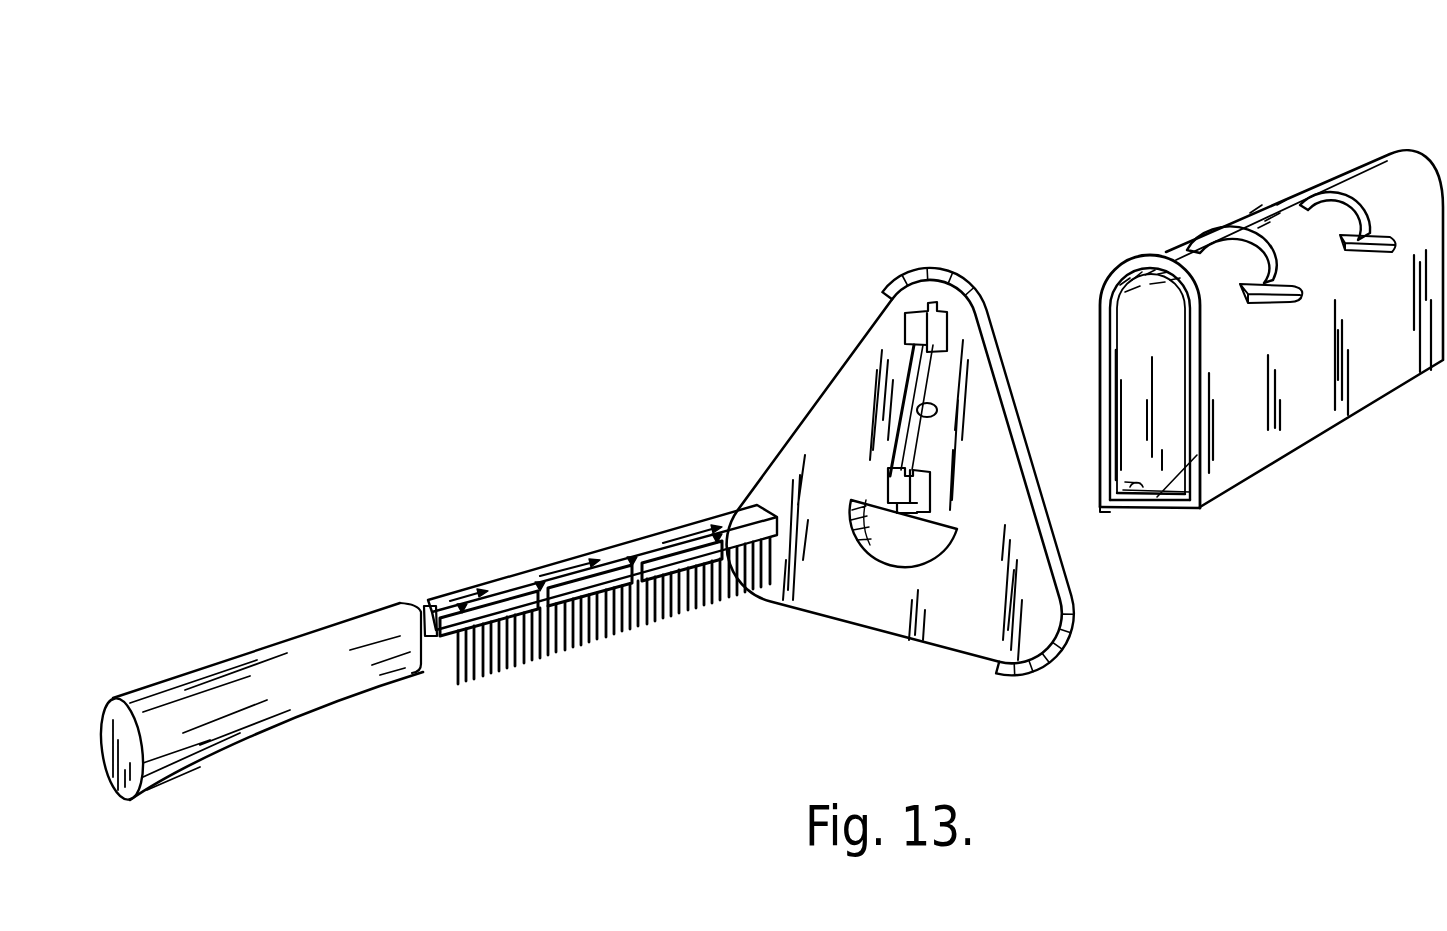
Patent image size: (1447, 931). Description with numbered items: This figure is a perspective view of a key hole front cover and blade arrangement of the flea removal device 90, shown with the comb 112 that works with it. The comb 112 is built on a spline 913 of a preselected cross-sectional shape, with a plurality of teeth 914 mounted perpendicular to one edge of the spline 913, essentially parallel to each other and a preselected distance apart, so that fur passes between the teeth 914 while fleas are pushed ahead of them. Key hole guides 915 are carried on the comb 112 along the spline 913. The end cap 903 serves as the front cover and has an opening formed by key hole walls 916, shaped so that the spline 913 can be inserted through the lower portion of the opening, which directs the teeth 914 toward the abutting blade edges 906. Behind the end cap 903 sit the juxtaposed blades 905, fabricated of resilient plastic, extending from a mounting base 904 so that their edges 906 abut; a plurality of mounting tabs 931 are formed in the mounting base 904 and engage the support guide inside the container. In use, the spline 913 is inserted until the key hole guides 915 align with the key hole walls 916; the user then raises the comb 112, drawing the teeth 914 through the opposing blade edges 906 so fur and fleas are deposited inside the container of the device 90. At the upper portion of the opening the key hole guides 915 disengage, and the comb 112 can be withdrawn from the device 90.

The comb 112 is at (280, 650).
The spline 913 is at (605, 553).
The teeth 914 is at (600, 627).
The key hole guides 915 is at (420, 600).
The end cap 903 is at (893, 312).
The key hole walls 916 is at (917, 410).
The device 90 is at (1264, 339).
The mounting base 904 is at (1256, 452).
The blades 905 is at (1137, 509).
The blade edges 906 is at (1101, 508).
The mounting tabs 931 is at (1236, 203).